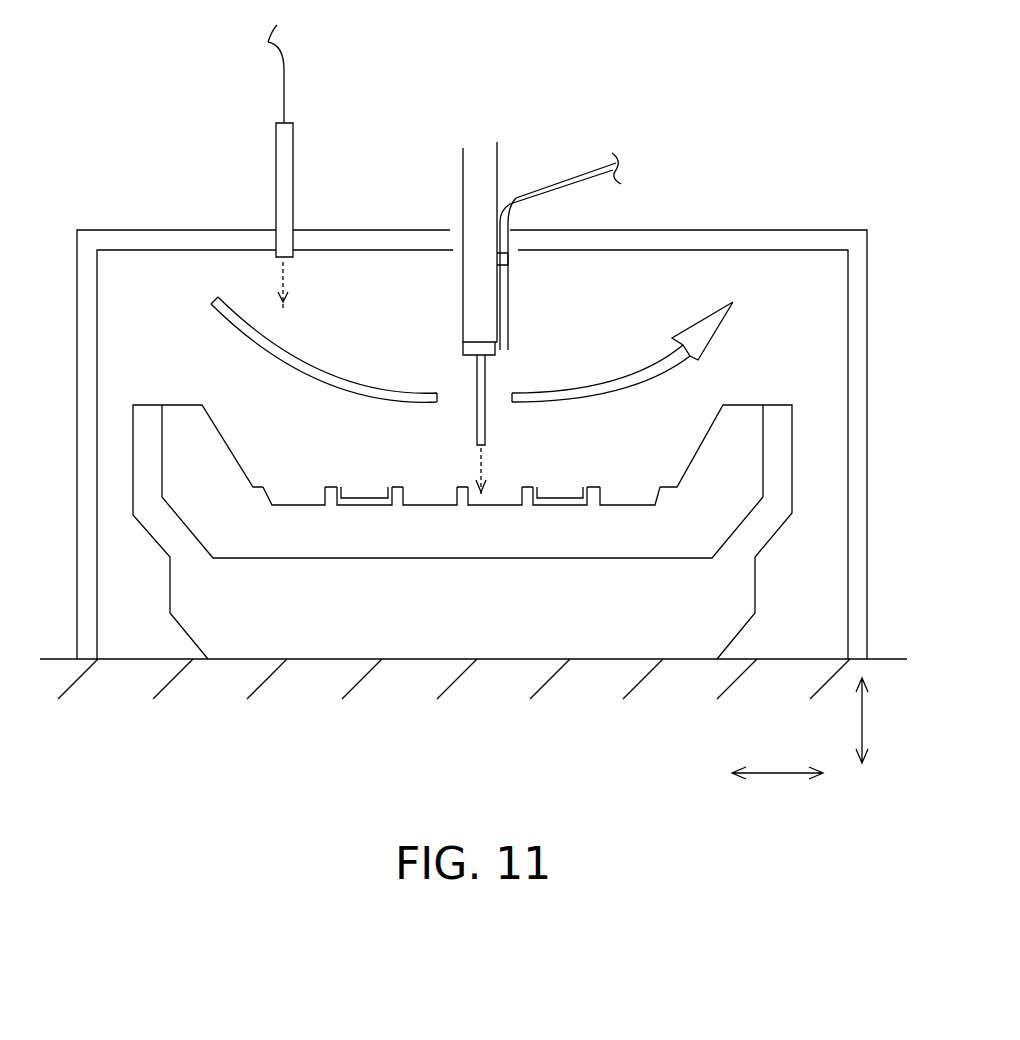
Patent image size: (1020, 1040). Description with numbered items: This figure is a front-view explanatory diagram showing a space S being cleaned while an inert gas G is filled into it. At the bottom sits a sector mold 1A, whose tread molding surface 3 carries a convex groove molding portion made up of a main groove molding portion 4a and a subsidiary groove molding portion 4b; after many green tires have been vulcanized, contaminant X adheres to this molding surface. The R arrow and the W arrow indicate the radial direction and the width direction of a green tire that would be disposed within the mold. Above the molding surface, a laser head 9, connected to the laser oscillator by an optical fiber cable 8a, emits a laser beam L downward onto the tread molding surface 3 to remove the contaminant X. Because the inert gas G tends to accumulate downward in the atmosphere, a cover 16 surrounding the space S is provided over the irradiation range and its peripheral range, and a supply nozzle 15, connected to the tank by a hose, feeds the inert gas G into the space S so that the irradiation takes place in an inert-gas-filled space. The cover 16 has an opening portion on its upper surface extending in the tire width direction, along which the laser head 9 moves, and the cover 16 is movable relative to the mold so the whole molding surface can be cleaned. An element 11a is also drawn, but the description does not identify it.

The sector mold 1A is at (188, 405).
The tread molding surface 3 is at (636, 500).
The main groove molding portion 4a is at (337, 490).
The subsidiary groove molding portion 4b is at (290, 490).
The optical fiber cable 8a is at (573, 178).
The laser head 9 is at (481, 387).
The nozzle 11a is at (490, 183).
The supply nozzle 15 is at (281, 152).
The cover 16 is at (747, 240).
The space S is at (410, 297).
The inert gas G is at (287, 290).
The laser beam L is at (473, 462).
The contaminant X is at (360, 505).
The R arrow R is at (874, 720).
The W arrow W is at (777, 757).